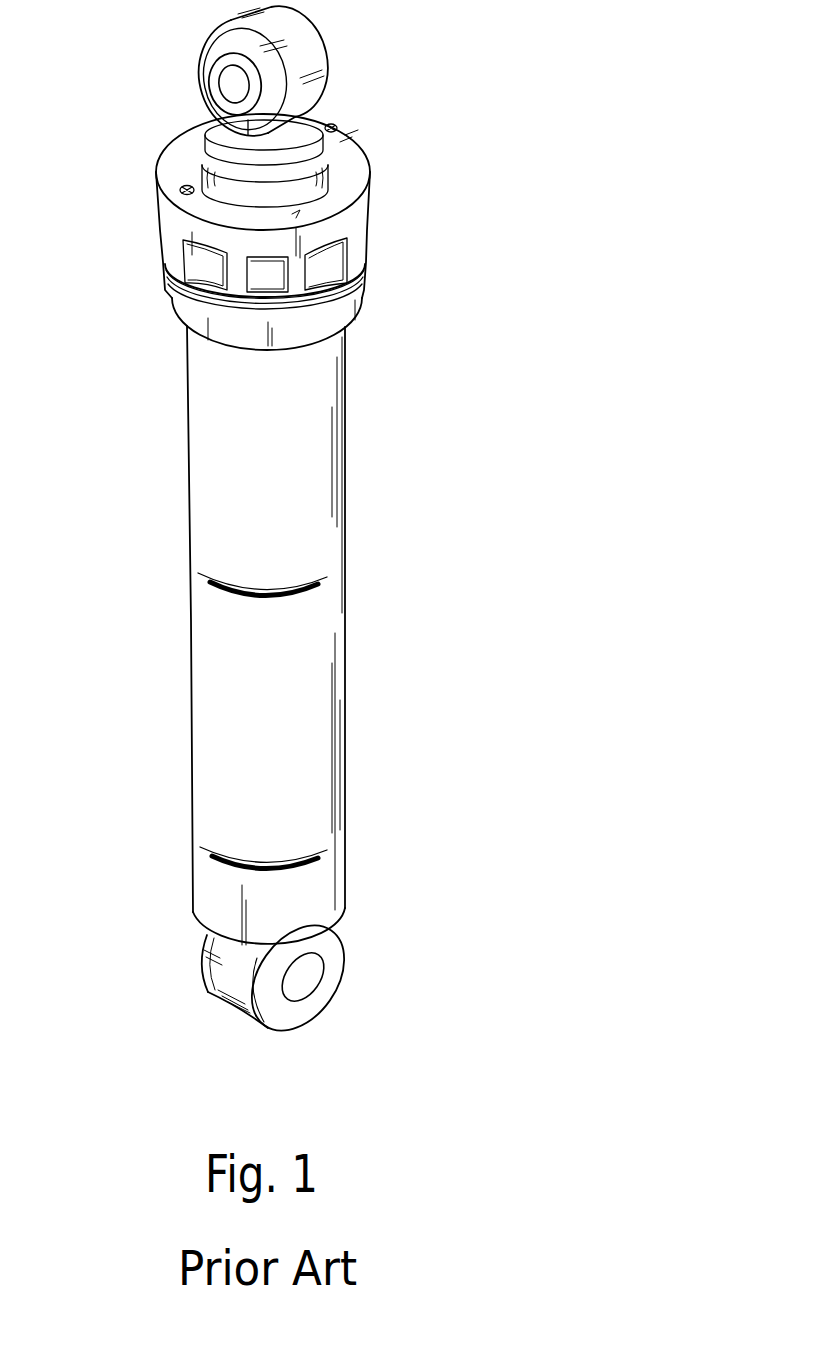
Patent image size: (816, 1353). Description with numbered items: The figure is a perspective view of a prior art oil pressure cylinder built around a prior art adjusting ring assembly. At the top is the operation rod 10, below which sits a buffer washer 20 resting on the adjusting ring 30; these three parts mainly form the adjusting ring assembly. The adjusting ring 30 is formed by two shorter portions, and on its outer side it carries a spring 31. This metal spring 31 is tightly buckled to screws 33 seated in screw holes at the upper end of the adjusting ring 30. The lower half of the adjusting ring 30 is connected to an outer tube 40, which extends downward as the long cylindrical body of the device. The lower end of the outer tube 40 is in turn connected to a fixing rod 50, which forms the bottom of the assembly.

The operation rod 10 is at (329, 52).
The buffer washer 20 is at (328, 120).
The adjusting ring 30 is at (353, 173).
The spring 31 is at (366, 264).
The screws 33 is at (158, 172).
The outer tube 40 is at (197, 408).
The fixing rod 50 is at (198, 968).